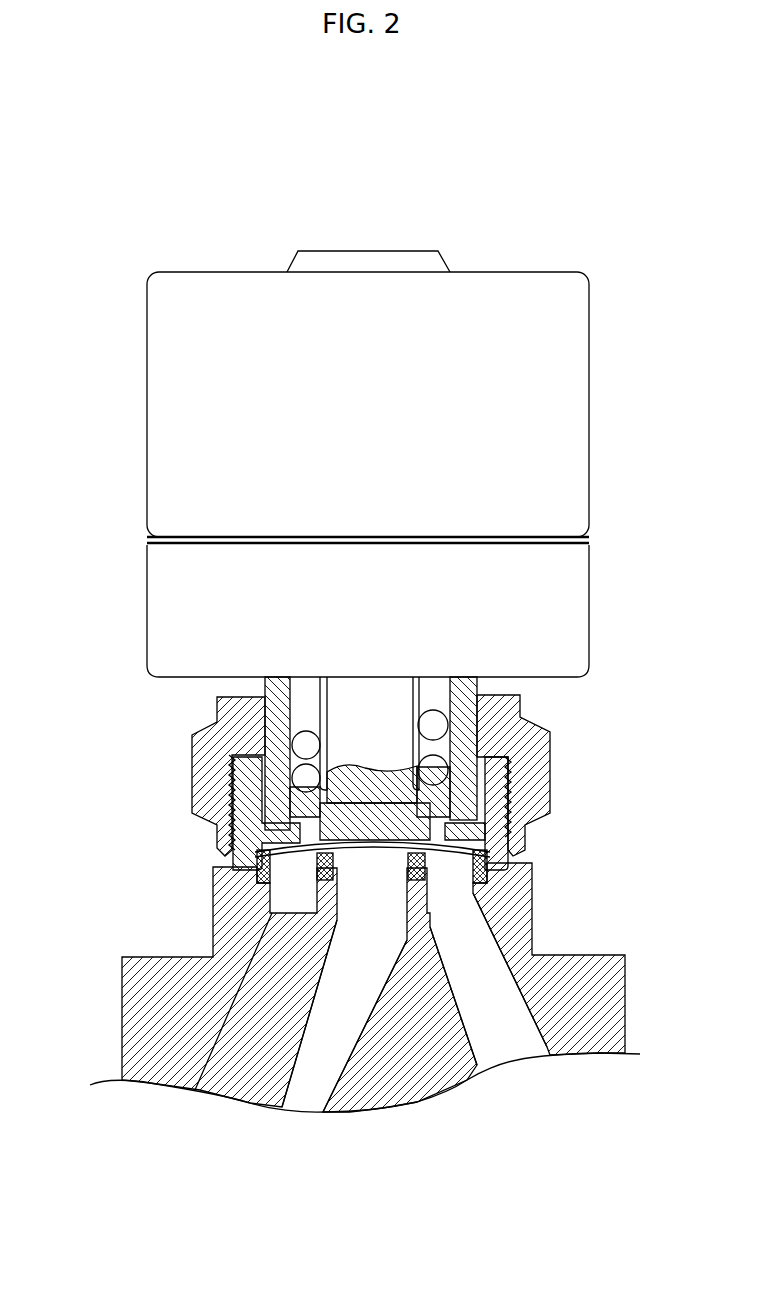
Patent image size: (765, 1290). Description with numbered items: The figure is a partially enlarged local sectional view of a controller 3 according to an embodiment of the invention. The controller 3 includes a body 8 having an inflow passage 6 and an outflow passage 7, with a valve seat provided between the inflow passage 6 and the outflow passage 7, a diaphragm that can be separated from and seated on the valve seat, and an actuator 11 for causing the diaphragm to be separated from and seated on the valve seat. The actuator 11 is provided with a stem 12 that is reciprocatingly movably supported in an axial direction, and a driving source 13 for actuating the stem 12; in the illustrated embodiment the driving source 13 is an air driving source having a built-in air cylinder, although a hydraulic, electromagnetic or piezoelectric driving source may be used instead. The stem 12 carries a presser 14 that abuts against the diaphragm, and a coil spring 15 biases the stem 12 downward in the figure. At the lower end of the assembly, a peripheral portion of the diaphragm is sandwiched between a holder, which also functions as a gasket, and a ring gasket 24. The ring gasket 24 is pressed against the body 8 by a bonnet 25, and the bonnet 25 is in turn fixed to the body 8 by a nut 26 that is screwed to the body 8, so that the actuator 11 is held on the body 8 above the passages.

The controller 3 is at (128, 186).
The actuator 11 is at (607, 428).
The driving source 13 is at (589, 483).
The stem 12 is at (375, 695).
The bonnet 25 is at (265, 680).
The nut 26 is at (197, 765).
The ring gasket 24 is at (220, 833).
The coil spring 15 is at (475, 722).
The presser 14 is at (488, 800).
The body 8 is at (178, 952).
The inflow passage 6 is at (293, 1068).
The outflow passage 7 is at (477, 1052).